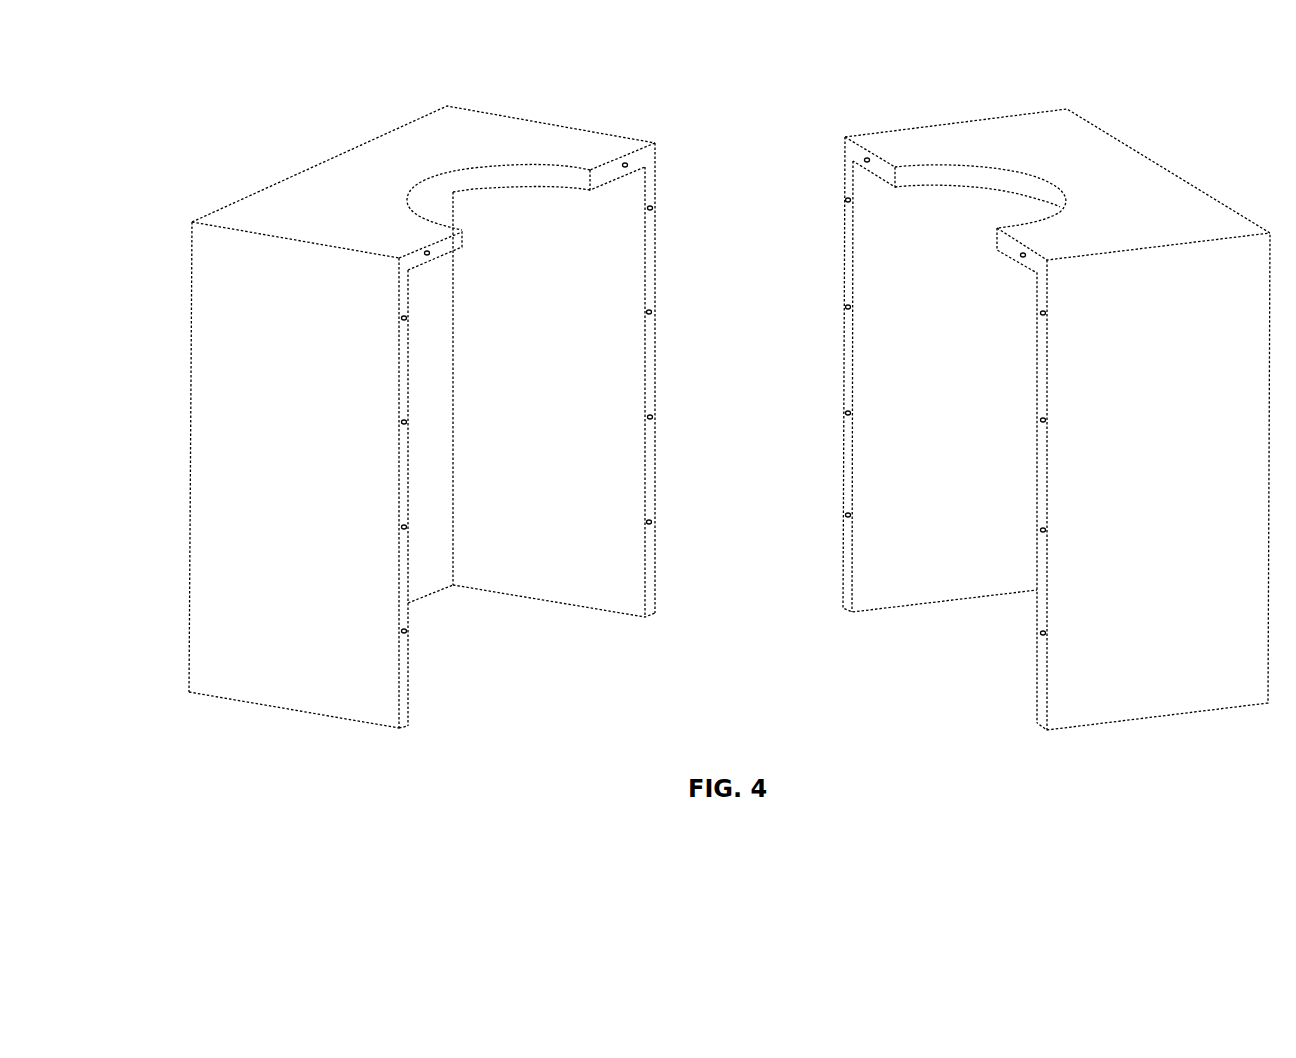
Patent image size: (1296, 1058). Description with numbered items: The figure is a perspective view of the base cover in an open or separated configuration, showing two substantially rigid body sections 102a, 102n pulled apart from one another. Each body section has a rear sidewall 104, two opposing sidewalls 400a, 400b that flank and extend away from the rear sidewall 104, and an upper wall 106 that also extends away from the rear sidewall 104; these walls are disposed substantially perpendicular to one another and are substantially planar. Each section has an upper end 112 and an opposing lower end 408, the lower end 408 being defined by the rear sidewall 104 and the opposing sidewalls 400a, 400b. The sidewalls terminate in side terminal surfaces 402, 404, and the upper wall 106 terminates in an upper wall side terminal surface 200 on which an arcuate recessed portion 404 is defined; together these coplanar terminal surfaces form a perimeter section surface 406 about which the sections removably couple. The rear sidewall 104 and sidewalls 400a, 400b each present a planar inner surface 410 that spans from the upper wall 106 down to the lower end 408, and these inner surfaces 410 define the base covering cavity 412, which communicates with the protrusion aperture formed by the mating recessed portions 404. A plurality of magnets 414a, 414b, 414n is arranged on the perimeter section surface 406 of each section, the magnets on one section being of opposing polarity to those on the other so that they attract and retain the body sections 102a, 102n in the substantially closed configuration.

The substantially rigid body section 102a is at (338, 177).
The substantially rigid body section 102n is at (982, 138).
The rear sidewall 104 is at (418, 578).
The upper wall 106 is at (287, 217).
The upper end 112 is at (215, 225).
The upper wall side terminal surface 200 is at (595, 176).
The opposing sidewall 400a is at (233, 523).
The opposing sidewall 400b is at (528, 556).
The side terminal surface 402 is at (402, 663).
The recessed portion 404 is at (471, 210).
The perimeter section surface 406 is at (402, 370).
The lower end 408 is at (228, 698).
The inner surface 410 is at (568, 370).
The base covering cavity 412 is at (508, 461).
The magnet 414a is at (400, 632).
The magnet 414b is at (402, 527).
The magnet 414n is at (650, 522).